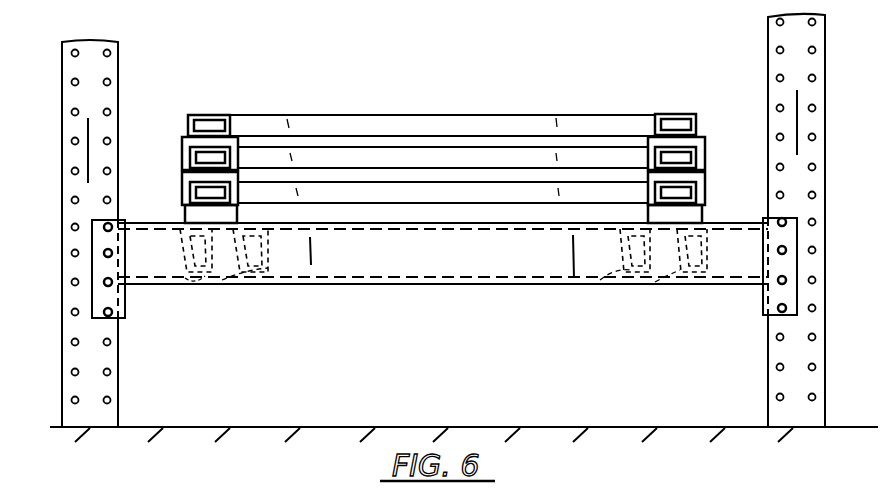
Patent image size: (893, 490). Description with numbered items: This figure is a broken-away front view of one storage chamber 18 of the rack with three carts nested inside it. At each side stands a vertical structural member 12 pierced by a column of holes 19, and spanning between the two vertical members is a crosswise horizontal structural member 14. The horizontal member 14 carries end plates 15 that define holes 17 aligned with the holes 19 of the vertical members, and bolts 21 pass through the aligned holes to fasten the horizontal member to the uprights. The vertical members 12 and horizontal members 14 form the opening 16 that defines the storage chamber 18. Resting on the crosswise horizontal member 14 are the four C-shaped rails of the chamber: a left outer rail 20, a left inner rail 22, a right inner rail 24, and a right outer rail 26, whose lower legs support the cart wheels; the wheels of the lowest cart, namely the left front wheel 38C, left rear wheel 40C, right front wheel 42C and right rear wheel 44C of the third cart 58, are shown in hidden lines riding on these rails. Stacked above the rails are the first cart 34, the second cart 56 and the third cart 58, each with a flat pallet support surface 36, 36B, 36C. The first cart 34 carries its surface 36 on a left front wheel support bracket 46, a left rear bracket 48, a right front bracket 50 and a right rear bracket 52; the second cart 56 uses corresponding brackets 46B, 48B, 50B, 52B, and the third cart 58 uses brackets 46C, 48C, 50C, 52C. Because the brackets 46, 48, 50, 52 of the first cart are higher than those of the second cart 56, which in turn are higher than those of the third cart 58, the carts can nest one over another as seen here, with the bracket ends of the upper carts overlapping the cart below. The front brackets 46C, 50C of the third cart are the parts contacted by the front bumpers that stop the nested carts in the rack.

The vertical structural member 12 is at (118, 49).
The crosswise horizontal structural member 14 is at (450, 283).
The end plate 15 is at (762, 317).
The opening 16 is at (122, 122).
The hole 17 is at (100, 310).
The storage chamber 18 is at (462, 41).
The hole 19 is at (108, 110).
The left outer rail 20 is at (203, 275).
The bolt 21 is at (104, 282).
The left inner rail 22 is at (270, 260).
The right inner rail 24 is at (596, 280).
The right outer rail 26 is at (678, 282).
The first cart 34 is at (338, 115).
The pallet support surface 36 is at (448, 115).
The pallet support surface of second cart 36B is at (487, 147).
The pallet support surface of third cart 36C is at (503, 182).
The left front wheel of third cart 38C is at (183, 273).
The left rear wheel of third cart 40C is at (238, 277).
The right front wheel of third cart 42C is at (703, 277).
The right rear wheel of third cart 44C is at (643, 287).
The left front wheel support bracket 46 is at (182, 145).
The left front wheel support bracket of second cart 46B is at (182, 182).
The left front wheel support bracket of third cart 46C is at (185, 212).
The left rear bracket 48 is at (240, 142).
The left rear bracket of second cart 48B is at (246, 175).
The left rear bracket of third cart 48C is at (243, 217).
The right front bracket 50 is at (705, 143).
The right front bracket of second cart 50B is at (705, 184).
The right front bracket of third cart 50C is at (705, 214).
The right rear bracket 52 is at (647, 138).
The right rear bracket of second cart 52B is at (645, 172).
The right rear bracket of third cart 52C is at (645, 208).
The second cart 56 is at (365, 152).
The third cart 58 is at (387, 182).